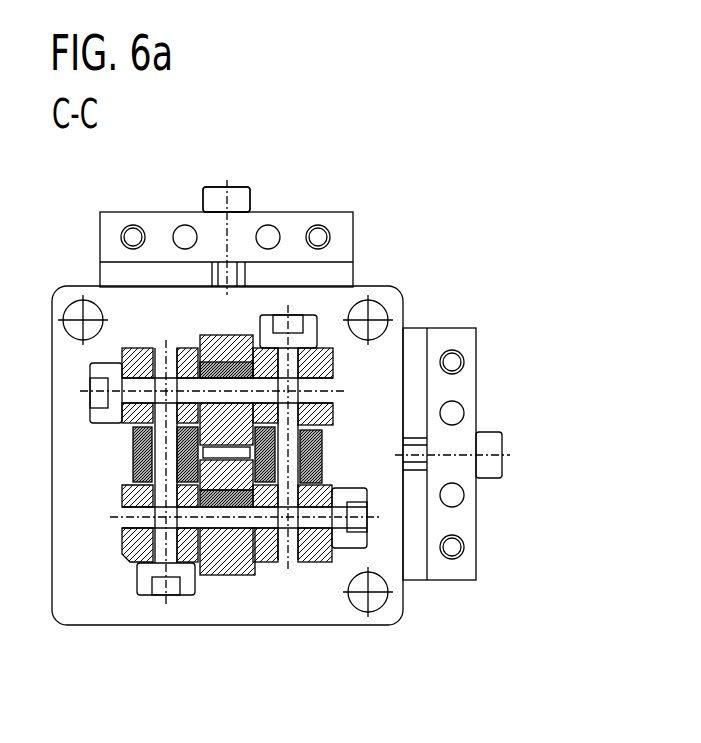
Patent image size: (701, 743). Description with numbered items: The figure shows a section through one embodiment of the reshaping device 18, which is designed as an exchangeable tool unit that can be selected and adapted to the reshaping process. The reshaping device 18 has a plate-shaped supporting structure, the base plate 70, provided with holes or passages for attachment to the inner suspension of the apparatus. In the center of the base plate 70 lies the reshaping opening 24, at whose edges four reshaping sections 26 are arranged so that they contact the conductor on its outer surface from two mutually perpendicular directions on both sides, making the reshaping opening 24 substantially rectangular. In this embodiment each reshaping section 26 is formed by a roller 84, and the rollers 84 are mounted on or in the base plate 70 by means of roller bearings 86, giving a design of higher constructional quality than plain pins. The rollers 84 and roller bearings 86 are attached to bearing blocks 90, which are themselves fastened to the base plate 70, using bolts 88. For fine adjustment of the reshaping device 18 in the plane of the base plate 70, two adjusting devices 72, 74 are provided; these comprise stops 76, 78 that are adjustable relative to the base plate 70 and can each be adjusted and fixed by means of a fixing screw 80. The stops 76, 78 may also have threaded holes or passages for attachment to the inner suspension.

The reshaping device 18 is at (443, 232).
The reshaping opening 24 is at (218, 453).
The reshaping section 26 is at (228, 572).
The base plate 70 is at (314, 625).
The adjusting device 72 is at (292, 202).
The adjusting device 74 is at (490, 520).
The stop 76 is at (158, 223).
The stop 78 is at (467, 385).
The fixing screw 80 is at (213, 197).
The roller 84 is at (322, 453).
The roller bearing 86 is at (137, 452).
The bolt 88 is at (268, 523).
The bearing block 90 is at (327, 365).